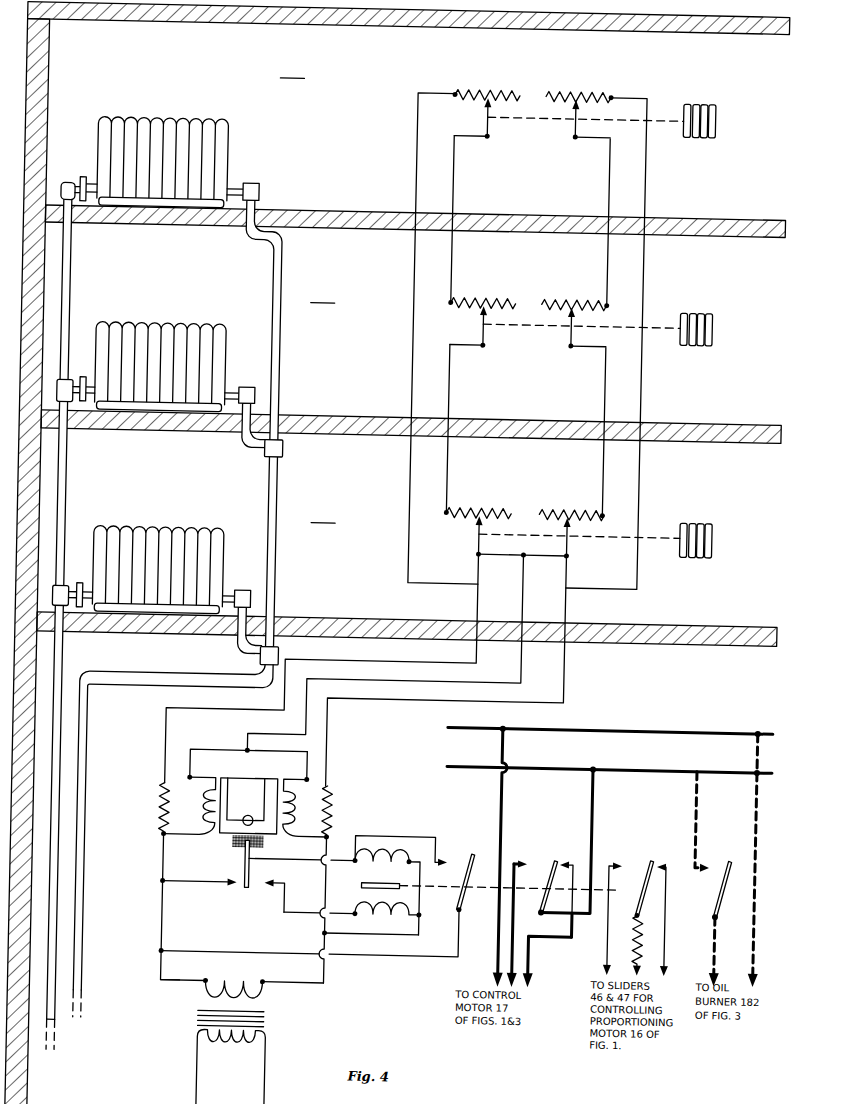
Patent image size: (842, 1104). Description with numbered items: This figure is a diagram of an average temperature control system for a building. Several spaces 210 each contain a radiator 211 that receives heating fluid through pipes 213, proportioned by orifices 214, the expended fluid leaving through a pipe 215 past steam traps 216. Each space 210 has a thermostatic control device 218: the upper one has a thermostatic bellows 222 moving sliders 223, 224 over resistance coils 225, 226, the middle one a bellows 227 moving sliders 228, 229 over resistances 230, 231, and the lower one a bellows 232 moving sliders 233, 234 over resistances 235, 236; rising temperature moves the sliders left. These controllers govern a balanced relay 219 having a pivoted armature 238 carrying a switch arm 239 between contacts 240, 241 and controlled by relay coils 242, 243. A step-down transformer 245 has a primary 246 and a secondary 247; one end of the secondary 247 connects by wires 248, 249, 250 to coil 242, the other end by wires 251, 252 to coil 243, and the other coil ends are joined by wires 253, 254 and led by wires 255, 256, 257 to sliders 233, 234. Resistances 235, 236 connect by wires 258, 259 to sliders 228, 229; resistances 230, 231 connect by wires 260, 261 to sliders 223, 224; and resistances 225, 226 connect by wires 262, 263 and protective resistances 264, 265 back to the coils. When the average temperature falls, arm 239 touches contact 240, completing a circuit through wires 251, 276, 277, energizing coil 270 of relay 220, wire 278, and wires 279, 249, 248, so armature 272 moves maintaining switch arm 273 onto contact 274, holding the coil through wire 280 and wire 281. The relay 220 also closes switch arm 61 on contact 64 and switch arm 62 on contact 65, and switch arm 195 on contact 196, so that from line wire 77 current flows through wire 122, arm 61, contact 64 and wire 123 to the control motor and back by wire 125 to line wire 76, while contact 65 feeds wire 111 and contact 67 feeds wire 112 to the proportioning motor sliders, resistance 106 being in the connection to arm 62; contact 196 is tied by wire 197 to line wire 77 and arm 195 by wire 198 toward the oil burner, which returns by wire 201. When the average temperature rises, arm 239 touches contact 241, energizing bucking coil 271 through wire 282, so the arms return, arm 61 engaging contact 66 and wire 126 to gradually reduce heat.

The spaces 210 is at (308, 293).
The radiators 211 is at (174, 120).
The pipes 213 is at (95, 688).
The orifices 214 is at (86, 176).
The pipe 215 is at (100, 868).
The steam traps 216 is at (258, 178).
The thermostatic control device 218 is at (710, 312).
The balanced relay 219 is at (174, 740).
The relay 220 is at (430, 822).
The thermostatic bellows 222 is at (715, 126).
The slider 223 is at (492, 124).
The slider 224 is at (577, 134).
The resistance coil 225 is at (490, 80).
The resistance coil 226 is at (578, 80).
The thermostatic bellows 227 is at (718, 332).
The slider 228 is at (493, 330).
The slider 229 is at (577, 340).
The resistance 230 is at (488, 288).
The resistance 231 is at (568, 288).
The thermostatic bellows 232 is at (726, 528).
The slider 233 is at (488, 541).
The slider 234 is at (581, 541).
The resistance 235 is at (490, 498).
The resistance 236 is at (574, 498).
The pivoted armature 238 is at (248, 793).
The switch arm 239 is at (263, 866).
The contact 240 is at (252, 881).
The contact 241 is at (283, 882).
The relay coil 242 is at (190, 804).
The relay coil 243 is at (305, 807).
The step-down transformer 245 is at (206, 1016).
The primary 246 is at (256, 1044).
The secondary 247 is at (252, 988).
The wire 248 is at (204, 977).
The wire 249 is at (184, 946).
The wire 250 is at (184, 850).
The wire 251 is at (346, 968).
The wire 252 is at (342, 925).
The wire 253 is at (216, 745).
The wire 254 is at (308, 745).
The wire 255 is at (492, 672).
The wire 256 is at (492, 548).
The wire 257 is at (552, 548).
The wire 258 is at (459, 395).
The wire 259 is at (612, 392).
The wire 260 is at (459, 180).
The wire 261 is at (612, 190).
The wire 262 is at (419, 318).
The wire 263 is at (650, 370).
The protective resistance 264 is at (176, 796).
The protective resistance 265 is at (348, 796).
The energizing coil 270 is at (398, 838).
The bucking coil 271 is at (387, 915).
The armature 272 is at (380, 877).
The maintaining switch arm 273 is at (459, 856).
The contact 274 is at (488, 848).
The wire 276 is at (384, 927).
The wire 277 is at (475, 899).
The wire 278 is at (290, 856).
The wire 279 is at (200, 879).
The wire 280 is at (471, 874).
The wire 281 is at (291, 946).
The wire 282 is at (305, 904).
The line wire 76 is at (688, 716).
The line wire 77 is at (672, 755).
The wire 122 is at (611, 788).
The wire 125 is at (520, 788).
The wire 123 is at (535, 920).
The wire 126 is at (550, 944).
The wire 111 is at (594, 923).
The wire 112 is at (685, 906).
The resistance 106 is at (656, 910).
The switch arm 61 is at (568, 866).
The switch arm 62 is at (664, 875).
The contact 64 is at (544, 852).
The contact 65 is at (638, 851).
The contact 66 is at (576, 851).
The contact 67 is at (674, 851).
The switch arm 195 is at (741, 871).
The contact 196 is at (723, 851).
The wire 197 is at (714, 780).
The wire 198 is at (732, 938).
The wire 201 is at (771, 750).